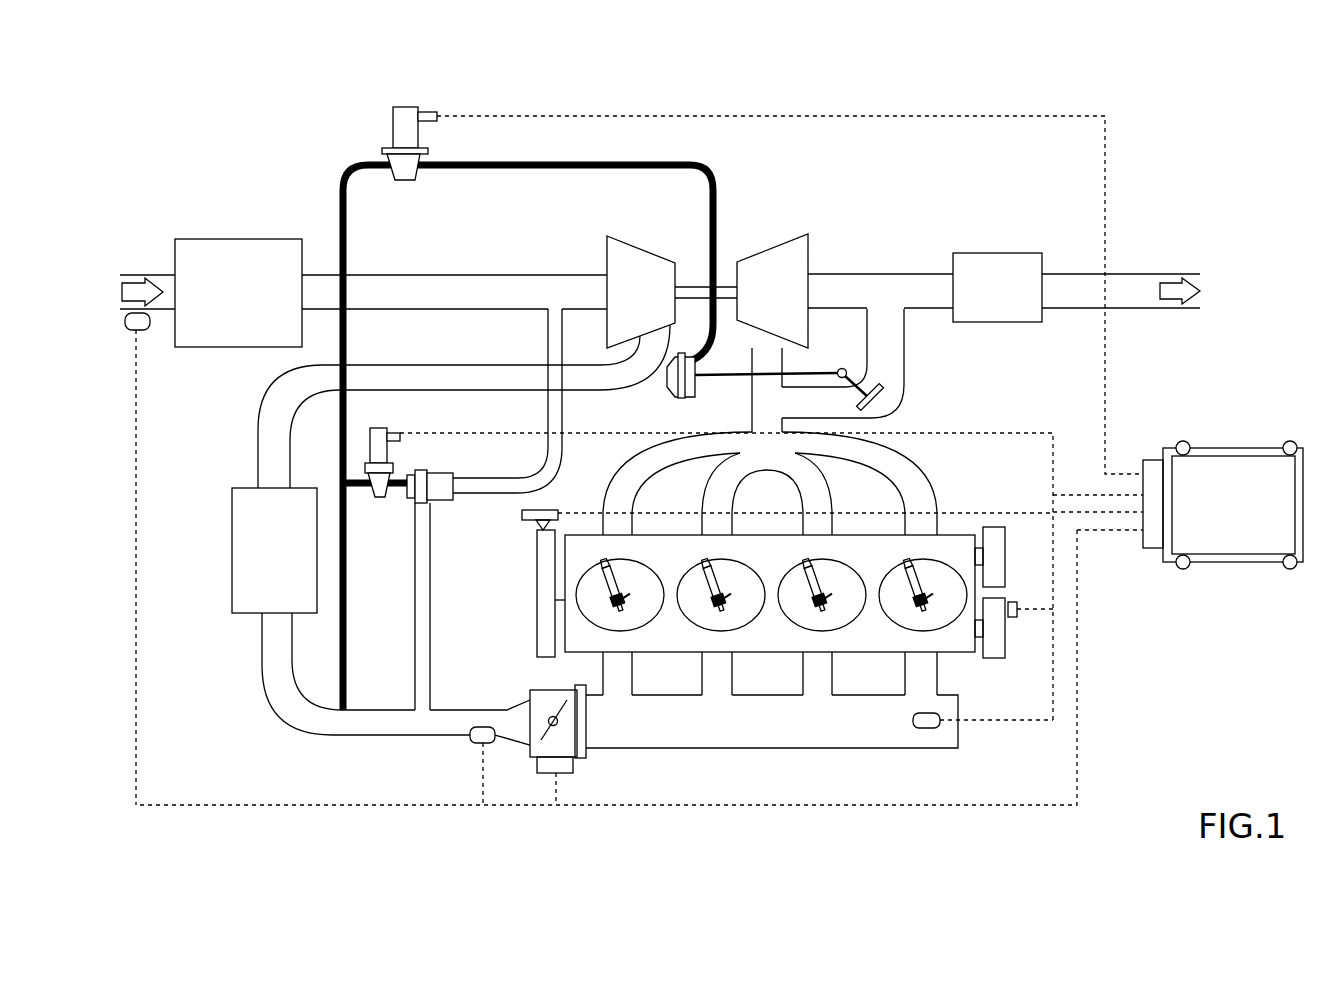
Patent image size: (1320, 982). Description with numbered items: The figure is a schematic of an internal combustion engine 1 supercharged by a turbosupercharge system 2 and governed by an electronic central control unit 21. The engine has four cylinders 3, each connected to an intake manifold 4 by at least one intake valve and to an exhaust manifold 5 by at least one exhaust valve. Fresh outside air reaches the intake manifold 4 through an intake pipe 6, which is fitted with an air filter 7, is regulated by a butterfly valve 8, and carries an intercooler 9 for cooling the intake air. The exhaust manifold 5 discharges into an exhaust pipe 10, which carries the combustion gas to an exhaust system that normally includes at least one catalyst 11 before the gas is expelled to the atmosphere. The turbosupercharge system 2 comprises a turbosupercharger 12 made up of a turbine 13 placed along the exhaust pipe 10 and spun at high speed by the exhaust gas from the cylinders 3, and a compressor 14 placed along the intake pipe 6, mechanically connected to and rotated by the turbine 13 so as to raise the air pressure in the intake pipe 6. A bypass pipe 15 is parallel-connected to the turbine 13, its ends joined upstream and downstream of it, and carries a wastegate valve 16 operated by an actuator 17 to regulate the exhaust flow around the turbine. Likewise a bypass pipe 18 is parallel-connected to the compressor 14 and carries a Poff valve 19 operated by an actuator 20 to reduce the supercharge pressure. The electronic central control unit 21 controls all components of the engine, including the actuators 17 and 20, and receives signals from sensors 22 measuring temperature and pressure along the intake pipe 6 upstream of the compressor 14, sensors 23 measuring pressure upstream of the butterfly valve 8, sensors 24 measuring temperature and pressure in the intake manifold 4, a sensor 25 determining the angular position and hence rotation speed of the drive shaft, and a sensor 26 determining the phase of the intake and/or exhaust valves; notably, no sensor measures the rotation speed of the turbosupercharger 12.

The internal combustion engine 1 is at (192, 205).
The turbosupercharge system 2 is at (528, 243).
The cylinders 3 is at (785, 592).
The intake manifold 4 is at (772, 700).
The exhaust manifold 5 is at (770, 483).
The intake pipe 6 is at (273, 452).
The air filter 7 is at (238, 293).
The butterfly valve 8 is at (552, 745).
The intercooler 9 is at (381, 616).
The exhaust pipe 10 is at (930, 287).
The catalyst 11 is at (997, 287).
The turbosupercharger 12 is at (705, 241).
The turbine 13 is at (748, 280).
The compressor 14 is at (621, 258).
The bypass pipe 15 is at (905, 358).
The wastegate valve 16 is at (885, 400).
The actuator 17 is at (430, 133).
The bypass pipe 18 is at (422, 592).
The Poff valve 19 is at (432, 503).
The actuator 20 is at (382, 448).
The electronic central control unit 21 is at (719, 623).
The sensors 22 is at (138, 330).
The sensors 23 is at (478, 745).
The sensors 24 is at (925, 728).
The sensor 25 is at (552, 508).
The sensor 26 is at (1012, 620).